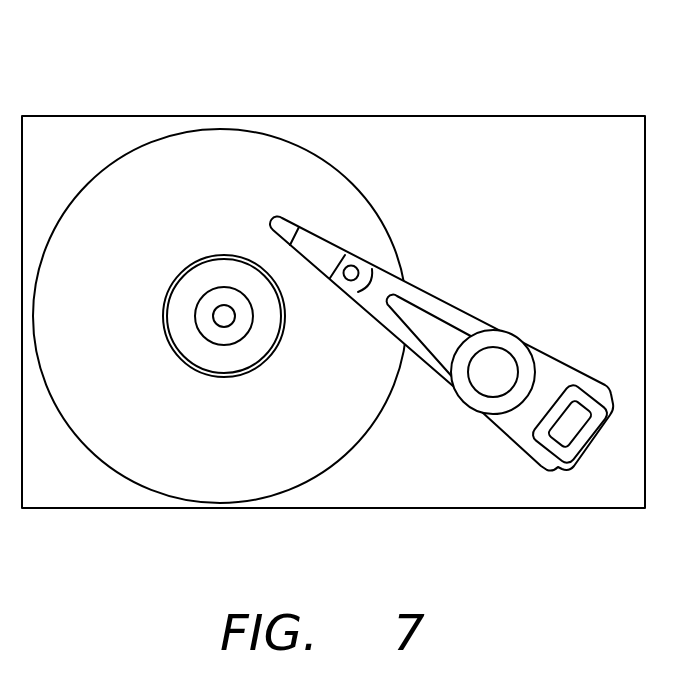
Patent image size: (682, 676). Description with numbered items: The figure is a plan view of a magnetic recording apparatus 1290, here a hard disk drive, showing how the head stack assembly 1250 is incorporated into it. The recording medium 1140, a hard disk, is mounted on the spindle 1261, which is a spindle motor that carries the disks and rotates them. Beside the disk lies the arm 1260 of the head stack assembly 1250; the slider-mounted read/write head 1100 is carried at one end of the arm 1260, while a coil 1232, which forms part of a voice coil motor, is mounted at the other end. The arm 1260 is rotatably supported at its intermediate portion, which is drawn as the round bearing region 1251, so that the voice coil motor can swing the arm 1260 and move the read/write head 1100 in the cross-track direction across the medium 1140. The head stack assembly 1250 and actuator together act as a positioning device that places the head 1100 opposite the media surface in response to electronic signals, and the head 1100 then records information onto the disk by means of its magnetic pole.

The magnetic recording apparatus 1290 is at (372, 106).
The read/write head 1100 is at (290, 220).
The pivot bearing 1251 is at (506, 332).
The medium 1140 is at (153, 491).
The spindle 1261 is at (225, 327).
The arm 1260 is at (432, 373).
The head stack assembly 1250 is at (503, 435).
The coil 1232 is at (593, 441).